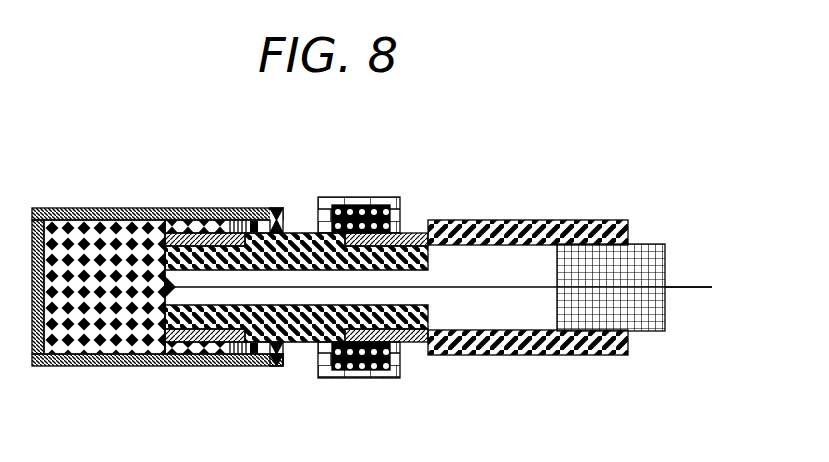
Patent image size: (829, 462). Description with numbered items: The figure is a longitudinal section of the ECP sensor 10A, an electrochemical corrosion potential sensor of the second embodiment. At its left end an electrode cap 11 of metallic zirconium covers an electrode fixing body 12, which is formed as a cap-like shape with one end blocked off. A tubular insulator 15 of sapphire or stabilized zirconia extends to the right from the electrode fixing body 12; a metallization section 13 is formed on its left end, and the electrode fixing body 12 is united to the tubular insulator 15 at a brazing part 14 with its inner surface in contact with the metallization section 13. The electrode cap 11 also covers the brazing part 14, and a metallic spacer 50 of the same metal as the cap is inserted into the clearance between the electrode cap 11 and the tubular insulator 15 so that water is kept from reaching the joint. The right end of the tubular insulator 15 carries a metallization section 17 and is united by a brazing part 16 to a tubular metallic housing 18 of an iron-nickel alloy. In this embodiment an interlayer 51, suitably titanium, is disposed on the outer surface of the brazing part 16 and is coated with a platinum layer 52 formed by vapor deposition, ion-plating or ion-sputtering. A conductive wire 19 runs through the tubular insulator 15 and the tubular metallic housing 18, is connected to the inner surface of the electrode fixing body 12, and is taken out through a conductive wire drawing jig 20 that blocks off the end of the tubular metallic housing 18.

The ECP sensor 10A is at (684, 327).
The electrode cap 11 is at (97, 208).
The electrode fixing body 12 is at (132, 240).
The metallization section 13 is at (195, 208).
The brazing part 14 is at (240, 208).
The tubular insulator 15 is at (297, 235).
The brazing part 16 is at (357, 222).
The metallization section 17 is at (387, 222).
The tubular metallic housing 18 is at (462, 222).
The conductive wire 19 is at (498, 288).
The conductive wire drawing jig 20 is at (648, 243).
The metallic spacer 50 is at (286, 366).
The interlayer 51 is at (386, 356).
The platinum layer 52 is at (356, 378).